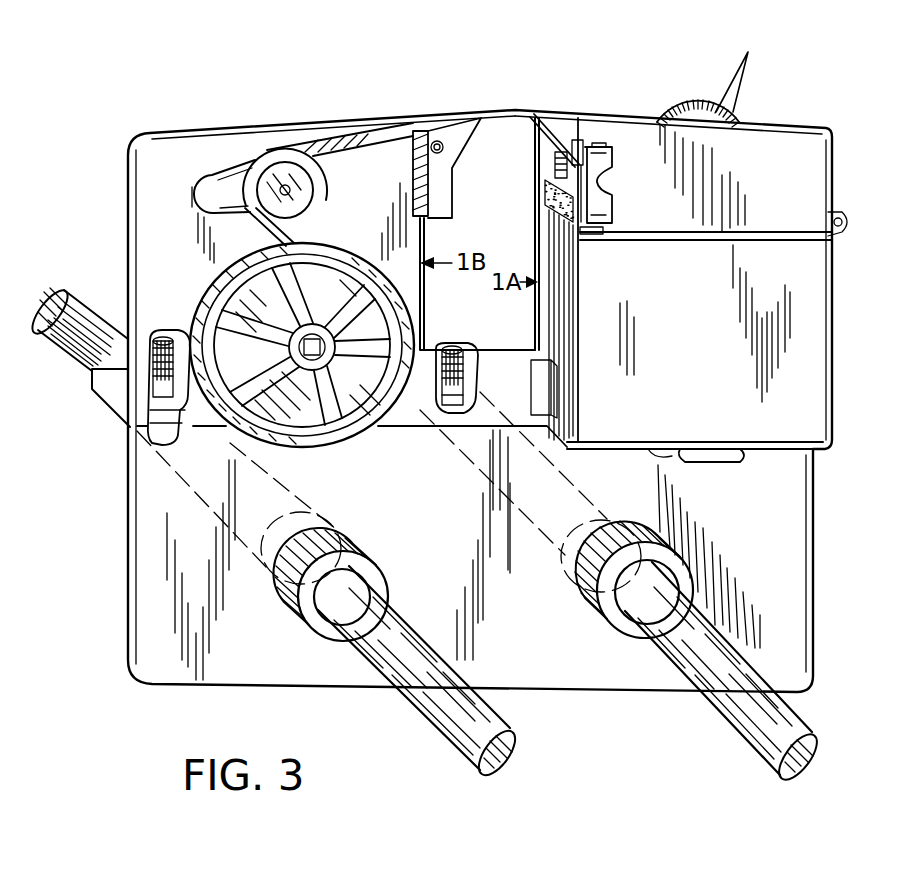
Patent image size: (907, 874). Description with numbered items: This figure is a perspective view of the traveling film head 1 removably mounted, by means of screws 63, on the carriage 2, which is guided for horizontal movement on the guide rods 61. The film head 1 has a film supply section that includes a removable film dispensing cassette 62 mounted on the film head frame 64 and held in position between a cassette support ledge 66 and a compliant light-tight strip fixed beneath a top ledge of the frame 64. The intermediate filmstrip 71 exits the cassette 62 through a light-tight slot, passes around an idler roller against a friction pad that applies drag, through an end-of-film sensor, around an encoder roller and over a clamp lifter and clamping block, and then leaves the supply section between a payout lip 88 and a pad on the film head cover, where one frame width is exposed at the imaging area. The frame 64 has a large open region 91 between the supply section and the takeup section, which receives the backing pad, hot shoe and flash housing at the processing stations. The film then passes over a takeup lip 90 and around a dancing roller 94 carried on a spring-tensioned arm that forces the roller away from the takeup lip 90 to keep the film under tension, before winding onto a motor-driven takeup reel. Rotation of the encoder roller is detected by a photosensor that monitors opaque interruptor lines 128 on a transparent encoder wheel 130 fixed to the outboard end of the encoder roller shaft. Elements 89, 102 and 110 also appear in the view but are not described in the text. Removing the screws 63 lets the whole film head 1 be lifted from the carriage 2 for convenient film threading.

The film head 1 is at (171, 212).
The carriage 2 is at (779, 523).
The guide rods 61 is at (511, 714).
The removable film dispensing cassette 62 is at (717, 350).
The screws 63 is at (160, 338).
The film head frame 64 is at (259, 127).
The cassette support ledge 66 is at (688, 468).
The intermediate filmstrip 71 is at (356, 146).
The payout lip 88 is at (534, 133).
The lid 89 is at (790, 127).
The takeup lip 90 is at (462, 163).
The large region 91 is at (518, 238).
The dancing roller 94 is at (313, 212).
The link rod 102 is at (581, 141).
The clip 110 is at (614, 198).
The opaque interruptor lines 128 is at (750, 53).
The transparent encoder wheel 130 is at (688, 100).